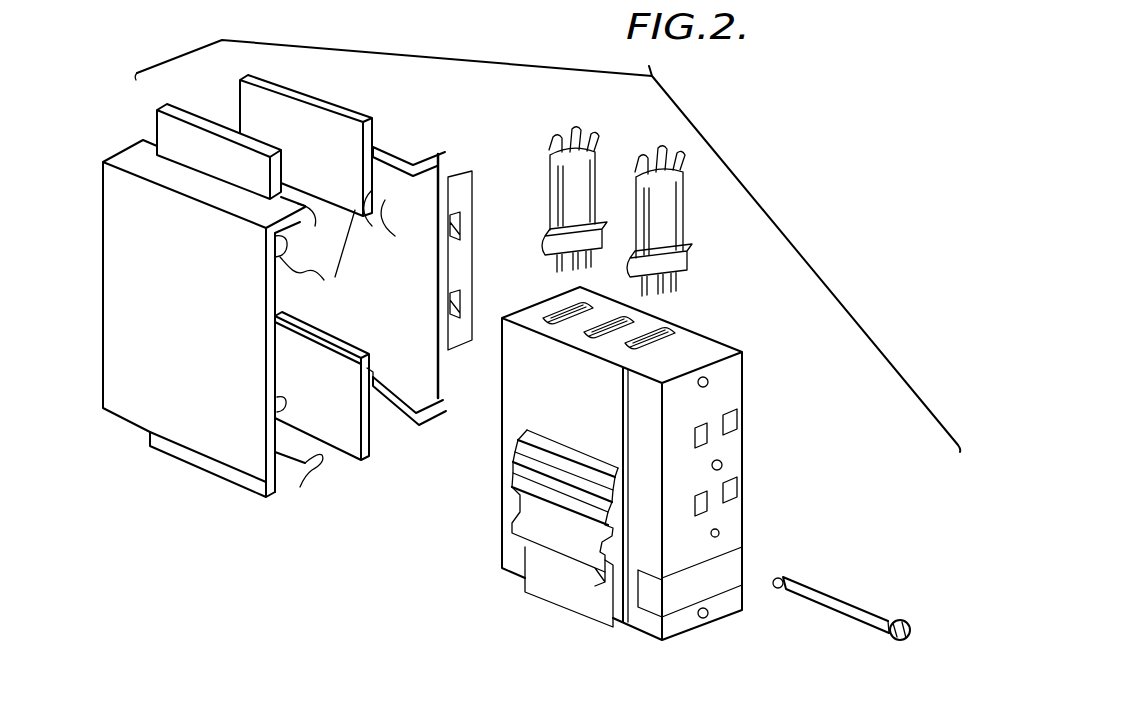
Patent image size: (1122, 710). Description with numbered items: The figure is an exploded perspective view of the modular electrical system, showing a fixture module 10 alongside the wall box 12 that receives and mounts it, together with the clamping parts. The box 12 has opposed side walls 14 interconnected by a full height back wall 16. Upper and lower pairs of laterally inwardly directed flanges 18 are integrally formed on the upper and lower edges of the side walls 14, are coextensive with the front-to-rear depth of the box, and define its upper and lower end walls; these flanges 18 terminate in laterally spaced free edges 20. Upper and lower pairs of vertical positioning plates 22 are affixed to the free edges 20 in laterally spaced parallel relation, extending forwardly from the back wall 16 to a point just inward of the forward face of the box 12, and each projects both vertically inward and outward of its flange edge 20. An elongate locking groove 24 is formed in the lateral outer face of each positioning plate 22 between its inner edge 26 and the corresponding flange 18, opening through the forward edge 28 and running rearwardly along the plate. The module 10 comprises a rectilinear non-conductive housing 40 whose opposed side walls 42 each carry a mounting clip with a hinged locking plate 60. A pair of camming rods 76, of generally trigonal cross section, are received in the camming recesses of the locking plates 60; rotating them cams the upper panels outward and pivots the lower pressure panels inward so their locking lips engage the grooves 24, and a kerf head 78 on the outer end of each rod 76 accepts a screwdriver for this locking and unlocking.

The fixture module 10 is at (703, 326).
The wall box 12 is at (466, 150).
The side wall 14 is at (420, 197).
The back wall 16 is at (231, 120).
The flange 18 is at (388, 138).
The free edge 20 is at (322, 484).
The positioning plate 22 is at (250, 135).
The locking groove 24 is at (247, 418).
The inner edge 26 is at (340, 312).
The forward edge 28 is at (279, 439).
The housing 40 is at (535, 302).
The side wall 42 is at (512, 416).
The locking plate 60 is at (506, 512).
The camming rod 76 is at (850, 575).
The kerf head 78 is at (905, 622).